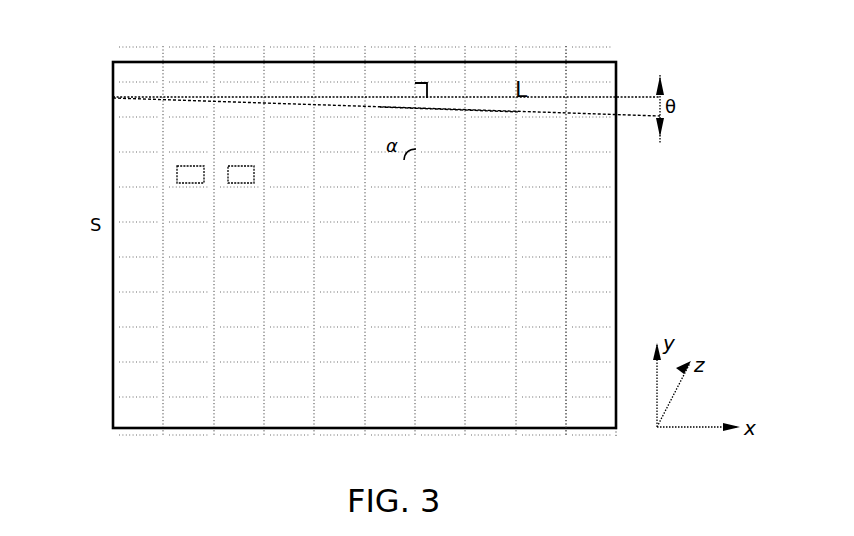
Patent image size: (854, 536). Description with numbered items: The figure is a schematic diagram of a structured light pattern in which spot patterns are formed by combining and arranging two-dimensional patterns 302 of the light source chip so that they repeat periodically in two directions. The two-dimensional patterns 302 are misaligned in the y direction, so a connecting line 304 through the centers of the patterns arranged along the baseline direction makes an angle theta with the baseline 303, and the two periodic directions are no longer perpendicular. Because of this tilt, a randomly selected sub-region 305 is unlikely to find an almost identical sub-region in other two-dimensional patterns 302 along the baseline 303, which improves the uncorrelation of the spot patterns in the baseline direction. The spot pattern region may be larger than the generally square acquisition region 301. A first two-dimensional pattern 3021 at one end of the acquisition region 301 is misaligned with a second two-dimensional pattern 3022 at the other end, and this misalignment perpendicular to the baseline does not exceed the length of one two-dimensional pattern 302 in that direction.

The acquisition region 301 is at (616, 215).
The two-dimensional pattern 302 is at (592, 255).
The baseline 303 is at (467, 98).
The connecting line 304 is at (448, 110).
The sub-region 305 is at (254, 174).
The first two-dimensional pattern 3021 is at (600, 108).
The second two-dimensional pattern 3022 is at (136, 103).